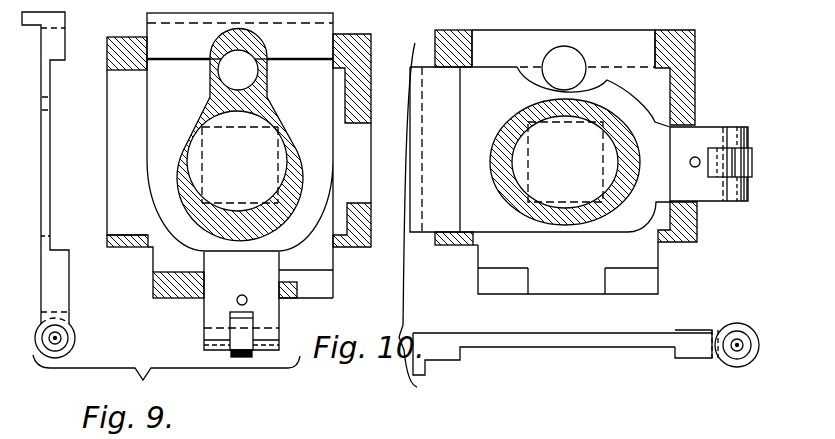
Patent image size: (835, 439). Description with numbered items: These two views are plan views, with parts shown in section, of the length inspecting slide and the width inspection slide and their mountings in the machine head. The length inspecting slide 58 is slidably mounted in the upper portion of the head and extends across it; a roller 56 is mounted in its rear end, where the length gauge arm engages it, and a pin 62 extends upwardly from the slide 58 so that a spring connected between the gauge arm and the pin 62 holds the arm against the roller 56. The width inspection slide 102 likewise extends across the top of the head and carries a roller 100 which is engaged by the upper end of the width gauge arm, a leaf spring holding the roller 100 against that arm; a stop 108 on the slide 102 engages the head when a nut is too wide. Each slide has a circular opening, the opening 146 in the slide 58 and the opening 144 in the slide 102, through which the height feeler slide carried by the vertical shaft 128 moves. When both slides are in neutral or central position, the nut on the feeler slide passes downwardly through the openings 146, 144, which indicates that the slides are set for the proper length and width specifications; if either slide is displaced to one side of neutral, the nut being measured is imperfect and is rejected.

In FIG. 9, the vertical shaft 128 is at (238, 70).
In FIG. 9, the circular opening 146 is at (292, 132).
In FIG. 9, the slide 58 is at (215, 308).
In FIG. 9, the pin 62 is at (247, 302).
In FIG. 9, the roller 56 is at (245, 358).
In FIG. 10, the circular opening 144 is at (515, 130).
In FIG. 10, the slide 102 is at (703, 135).
In FIG. 10, the roller 100 is at (753, 153).
In FIG. 10, the stop 108 is at (425, 368).